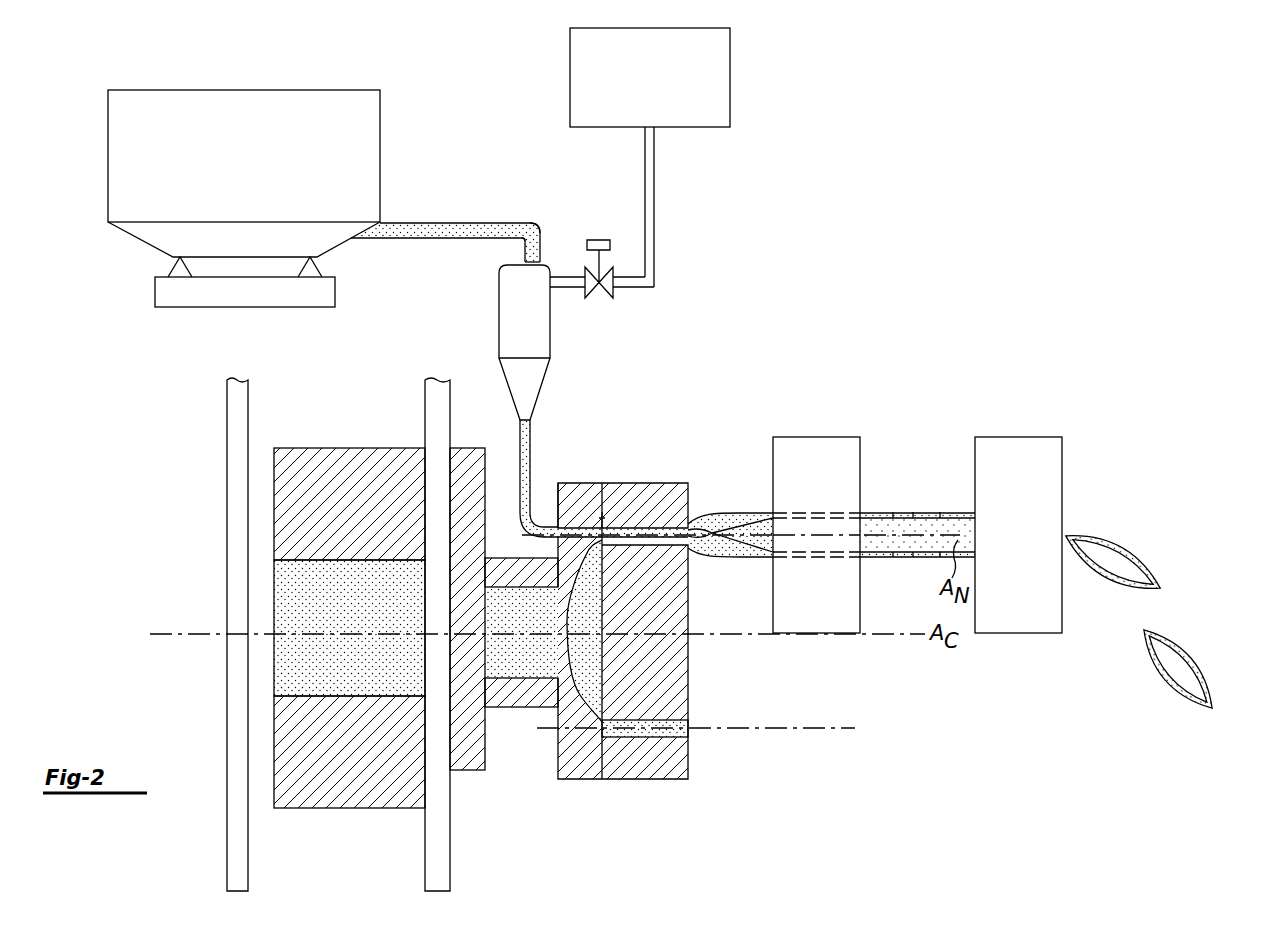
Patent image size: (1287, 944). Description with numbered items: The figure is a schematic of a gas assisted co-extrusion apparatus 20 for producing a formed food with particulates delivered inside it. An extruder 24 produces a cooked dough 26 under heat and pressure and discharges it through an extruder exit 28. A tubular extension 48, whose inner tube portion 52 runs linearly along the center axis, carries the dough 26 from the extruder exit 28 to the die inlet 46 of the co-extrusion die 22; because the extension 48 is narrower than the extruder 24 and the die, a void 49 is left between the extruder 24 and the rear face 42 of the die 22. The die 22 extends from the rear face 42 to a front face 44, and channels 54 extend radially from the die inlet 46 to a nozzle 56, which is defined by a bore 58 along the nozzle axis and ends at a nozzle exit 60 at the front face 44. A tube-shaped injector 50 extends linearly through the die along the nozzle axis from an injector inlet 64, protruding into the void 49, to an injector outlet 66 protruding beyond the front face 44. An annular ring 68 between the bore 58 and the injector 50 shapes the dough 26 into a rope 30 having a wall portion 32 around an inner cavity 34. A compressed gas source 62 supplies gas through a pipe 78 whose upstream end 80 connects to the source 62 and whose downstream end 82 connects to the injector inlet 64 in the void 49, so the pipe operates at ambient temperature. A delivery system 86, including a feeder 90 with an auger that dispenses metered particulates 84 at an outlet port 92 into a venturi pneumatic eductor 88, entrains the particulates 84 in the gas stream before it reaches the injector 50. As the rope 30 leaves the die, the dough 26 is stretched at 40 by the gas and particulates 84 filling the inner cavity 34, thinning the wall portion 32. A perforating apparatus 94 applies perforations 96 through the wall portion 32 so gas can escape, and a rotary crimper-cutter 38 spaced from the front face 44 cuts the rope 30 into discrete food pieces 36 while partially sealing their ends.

The gas assisted co-extrusion apparatus 20 is at (934, 226).
The co-extrusion die 22 is at (670, 782).
The extruder 24 is at (347, 811).
The dough 26 is at (289, 672).
The extruder exit 28 is at (487, 613).
The rope 30 is at (727, 561).
The wall portion 32 is at (762, 510).
The inner cavity 34 is at (762, 558).
The discrete food pieces 36 is at (1149, 560).
The rotary crimper-cutter 38 is at (1031, 538).
The stretching location 40 is at (693, 519).
The rear face 42 is at (558, 766).
The front face 44 is at (690, 765).
The die inlet 46 is at (590, 605).
The extension 48 is at (538, 706).
The void 49 is at (505, 493).
The injector 50 is at (622, 527).
The inner tube portion 52 is at (498, 694).
The channel 54 is at (585, 556).
The nozzle 56 is at (642, 525).
The bore 58 is at (602, 527).
The nozzle exit 60 is at (690, 737).
The compressed gas source 62 is at (664, 88).
The injector inlet 64 is at (558, 530).
The injector outlet 66 is at (735, 531).
The annular ring 68 is at (695, 548).
The pipe 78 is at (656, 229).
The upstream end 80 is at (655, 130).
The downstream end 82 is at (523, 538).
The particulates 84 is at (418, 230).
The delivery system 86 is at (528, 221).
The venturi pneumatic eductor 88 is at (536, 323).
The feeder 90 is at (258, 158).
The outlet port 92 is at (545, 262).
The perforating apparatus 94 is at (828, 488).
The perforations 96 is at (939, 513).